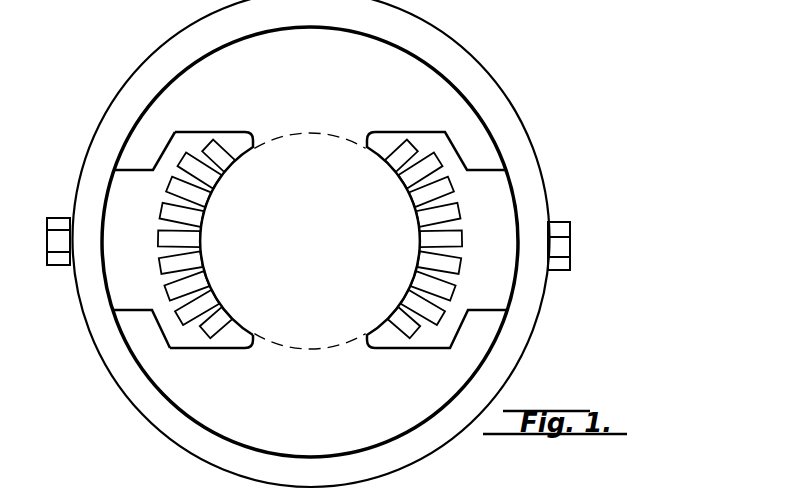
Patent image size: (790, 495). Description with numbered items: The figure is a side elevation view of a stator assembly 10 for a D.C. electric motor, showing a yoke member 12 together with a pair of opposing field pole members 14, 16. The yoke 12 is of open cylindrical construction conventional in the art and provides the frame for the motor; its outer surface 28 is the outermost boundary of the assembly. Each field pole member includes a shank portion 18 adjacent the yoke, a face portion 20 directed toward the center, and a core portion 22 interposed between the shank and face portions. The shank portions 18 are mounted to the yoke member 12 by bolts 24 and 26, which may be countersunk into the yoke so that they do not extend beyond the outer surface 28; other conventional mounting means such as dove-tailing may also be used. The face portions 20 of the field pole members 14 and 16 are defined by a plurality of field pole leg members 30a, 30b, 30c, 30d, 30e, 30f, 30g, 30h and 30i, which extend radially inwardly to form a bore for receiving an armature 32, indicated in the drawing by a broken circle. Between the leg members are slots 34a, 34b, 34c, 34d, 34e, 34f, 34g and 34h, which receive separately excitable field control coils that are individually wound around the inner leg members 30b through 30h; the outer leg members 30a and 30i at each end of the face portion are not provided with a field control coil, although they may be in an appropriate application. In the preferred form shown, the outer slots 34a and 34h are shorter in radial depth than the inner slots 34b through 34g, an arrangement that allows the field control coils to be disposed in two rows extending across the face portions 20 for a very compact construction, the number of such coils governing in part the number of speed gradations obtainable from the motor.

The stator assembly 10 is at (334, 243).
The yoke member 12 is at (467, 59).
The field pole member 14 is at (141, 236).
The field pole member 16 is at (503, 243).
The shank portion 18 is at (127, 177).
The face portion 20 is at (233, 133).
The core portion 22 is at (185, 138).
The bolt 24 is at (53, 217).
The bolt 26 is at (562, 222).
The outer surface 28 is at (96, 132).
The field pole leg member 30a is at (380, 151).
The field pole leg member 30b is at (400, 178).
The field pole leg member 30c is at (407, 197).
The field pole leg member 30d is at (413, 218).
The field pole leg member 30e is at (419, 236).
The field pole leg member 30f is at (416, 255).
The field pole leg member 30g is at (411, 278).
The field pole leg member 30h is at (401, 297).
The field pole leg member 30i is at (372, 327).
The armature 32 is at (317, 133).
The slot 34a is at (226, 165).
The slot 34b is at (212, 187).
The slot 34c is at (203, 207).
The slot 34d is at (200, 226).
The slot 34e is at (200, 242).
The slot 34f is at (203, 268).
The slot 34g is at (212, 290).
The slot 34h is at (222, 313).